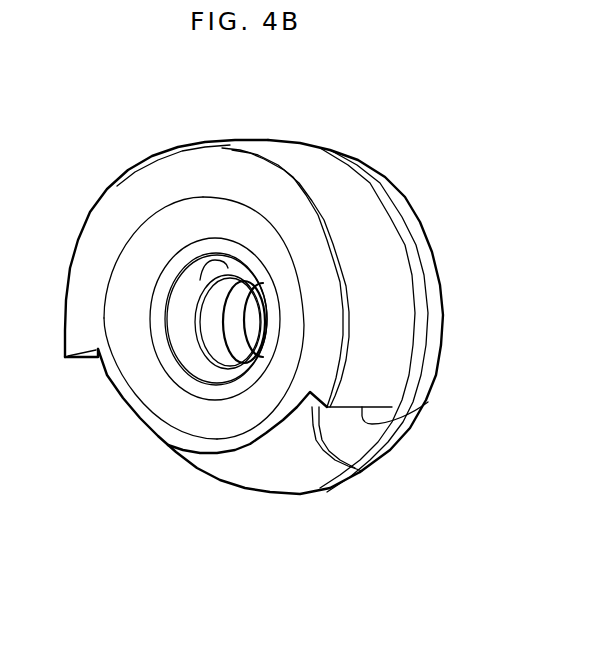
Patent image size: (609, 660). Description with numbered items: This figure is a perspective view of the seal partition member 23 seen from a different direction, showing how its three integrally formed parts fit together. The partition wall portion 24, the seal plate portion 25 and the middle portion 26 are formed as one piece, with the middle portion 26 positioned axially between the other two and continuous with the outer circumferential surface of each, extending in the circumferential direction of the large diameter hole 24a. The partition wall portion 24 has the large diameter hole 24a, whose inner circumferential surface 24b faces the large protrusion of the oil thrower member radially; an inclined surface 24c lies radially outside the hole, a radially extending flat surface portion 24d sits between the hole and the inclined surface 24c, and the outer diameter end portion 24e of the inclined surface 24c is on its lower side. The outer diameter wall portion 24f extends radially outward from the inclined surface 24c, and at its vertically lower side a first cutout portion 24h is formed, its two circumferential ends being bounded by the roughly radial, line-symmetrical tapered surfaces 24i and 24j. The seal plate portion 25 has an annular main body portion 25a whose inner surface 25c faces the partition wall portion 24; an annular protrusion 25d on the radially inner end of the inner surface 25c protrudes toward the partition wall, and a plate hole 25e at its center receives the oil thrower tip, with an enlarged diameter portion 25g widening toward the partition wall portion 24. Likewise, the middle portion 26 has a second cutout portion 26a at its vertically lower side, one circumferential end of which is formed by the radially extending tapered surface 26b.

The seal partition member 23 is at (245, 142).
The partition wall portion 24 is at (208, 142).
The large diameter hole 24a is at (160, 302).
The inner circumferential surface 24b is at (169, 296).
The inclined surface 24c is at (143, 240).
The flat surface portion 24d is at (157, 340).
The outer diameter end portion 24e is at (180, 437).
The outer diameter wall portion 24f is at (153, 192).
The first cutout portion 24h is at (380, 458).
The tapered surface 24i is at (330, 448).
The tapered surface 24j is at (88, 360).
The seal plate portion 25 is at (325, 139).
The main body portion 25a is at (318, 140).
The inner surface 25c is at (300, 467).
The annular protrusion 25d is at (222, 250).
The plate hole 25e is at (226, 326).
The enlarged diameter portion 25g is at (215, 306).
The middle portion 26 is at (253, 142).
The second cutout portion 26a is at (373, 424).
The tapered surface 26b is at (353, 423).